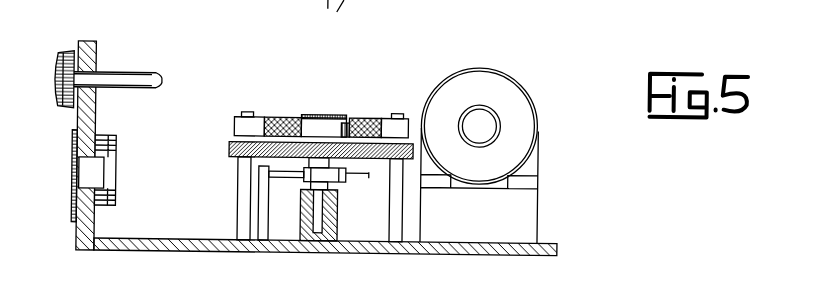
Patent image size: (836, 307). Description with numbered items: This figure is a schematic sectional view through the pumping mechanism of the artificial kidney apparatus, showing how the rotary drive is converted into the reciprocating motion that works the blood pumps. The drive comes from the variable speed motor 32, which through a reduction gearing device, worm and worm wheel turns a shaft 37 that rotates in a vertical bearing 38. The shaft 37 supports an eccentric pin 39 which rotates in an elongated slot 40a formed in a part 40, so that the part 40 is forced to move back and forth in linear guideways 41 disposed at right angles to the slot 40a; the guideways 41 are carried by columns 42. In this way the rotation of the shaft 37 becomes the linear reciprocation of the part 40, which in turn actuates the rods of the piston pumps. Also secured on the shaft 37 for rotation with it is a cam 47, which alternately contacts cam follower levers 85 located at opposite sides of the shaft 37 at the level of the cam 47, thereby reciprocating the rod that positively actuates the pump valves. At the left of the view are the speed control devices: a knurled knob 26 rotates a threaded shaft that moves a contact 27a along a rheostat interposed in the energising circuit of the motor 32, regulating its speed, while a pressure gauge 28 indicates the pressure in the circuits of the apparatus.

The knurled knob 26 is at (62, 50).
The contact 27a is at (90, 172).
The pressure gauge 28 is at (115, 143).
The variable speed motor 32 is at (502, 80).
The shaft 37 is at (317, 197).
The vertical bearing 38 is at (304, 224).
The eccentric pin 39 is at (344, 121).
The part 40 is at (295, 100).
The elongated slot 40a is at (313, 124).
The linear guideways 41 is at (263, 116).
The columns 42 is at (242, 176).
The cam 47 is at (337, 200).
The cam follower levers 85 is at (330, 178).